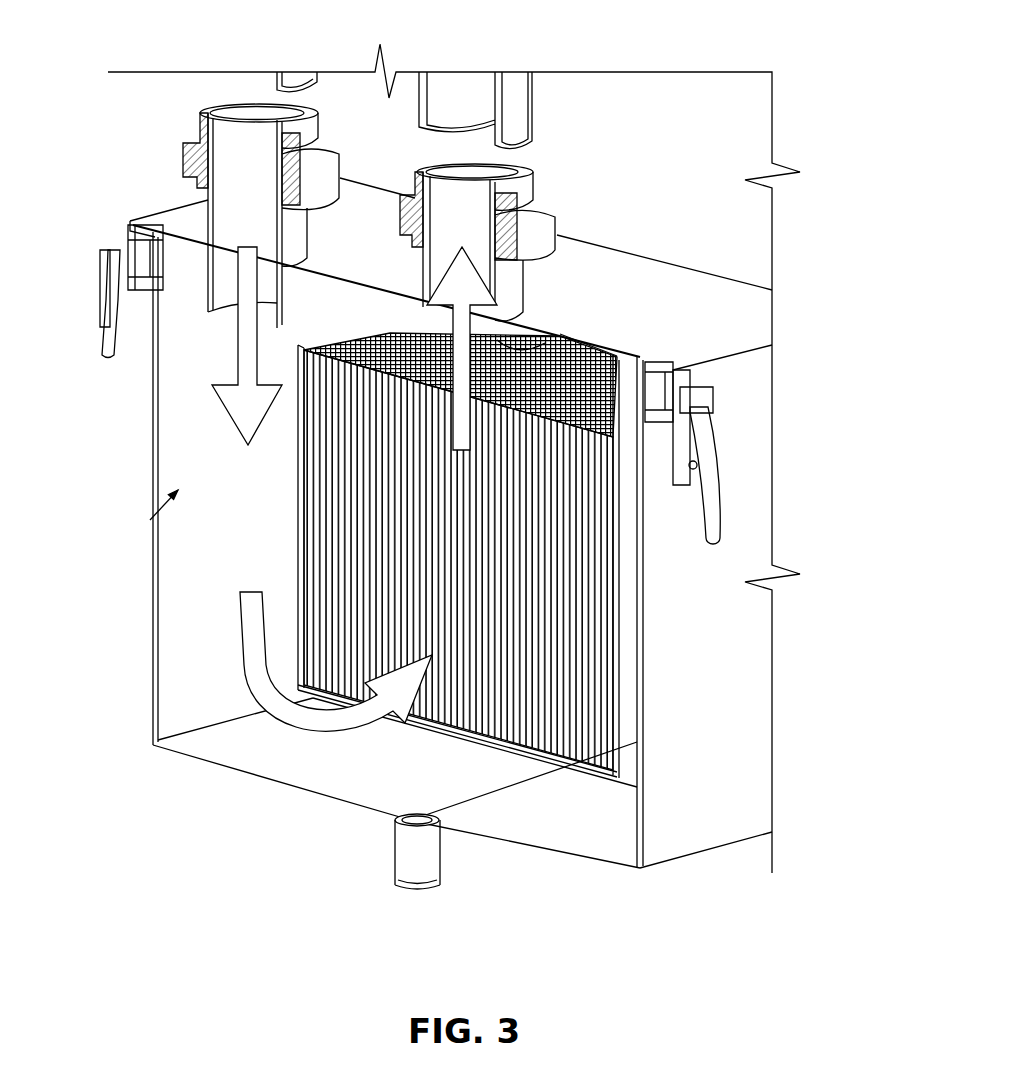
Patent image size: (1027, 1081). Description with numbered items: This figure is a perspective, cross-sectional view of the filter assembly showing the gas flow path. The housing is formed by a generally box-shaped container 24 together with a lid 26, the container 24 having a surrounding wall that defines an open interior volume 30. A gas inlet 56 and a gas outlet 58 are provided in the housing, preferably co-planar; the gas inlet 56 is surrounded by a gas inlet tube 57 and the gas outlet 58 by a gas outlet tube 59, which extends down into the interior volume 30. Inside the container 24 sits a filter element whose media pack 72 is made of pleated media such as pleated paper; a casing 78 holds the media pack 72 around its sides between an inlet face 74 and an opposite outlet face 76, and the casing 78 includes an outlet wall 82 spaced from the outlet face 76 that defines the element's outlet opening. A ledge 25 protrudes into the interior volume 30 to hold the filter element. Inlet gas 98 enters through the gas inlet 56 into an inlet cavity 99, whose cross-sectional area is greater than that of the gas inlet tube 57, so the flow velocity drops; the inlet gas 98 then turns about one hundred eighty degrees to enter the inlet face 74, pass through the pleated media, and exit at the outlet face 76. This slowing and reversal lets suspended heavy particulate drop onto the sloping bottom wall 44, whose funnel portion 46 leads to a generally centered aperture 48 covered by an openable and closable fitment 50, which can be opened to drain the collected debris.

The container 24 is at (153, 410).
The ledge 25 is at (640, 748).
The lid 26 is at (140, 225).
The interior volume 30 is at (165, 472).
The bottom wall 44 is at (160, 745).
The funnel portion 46 is at (290, 778).
The aperture 48 is at (395, 818).
The fitment 50 is at (420, 830).
The gas inlet 56 is at (235, 118).
The gas inlet tube 57 is at (200, 207).
The gas outlet 58 is at (500, 180).
The gas outlet tube 59 is at (517, 275).
The media pack 72 is at (593, 487).
The inlet face 74 is at (560, 765).
The outlet face 76 is at (660, 370).
The casing 78 is at (300, 495).
The outlet wall 82 is at (592, 368).
The inlet gas 98 is at (247, 330).
The inlet cavity 99 is at (150, 520).